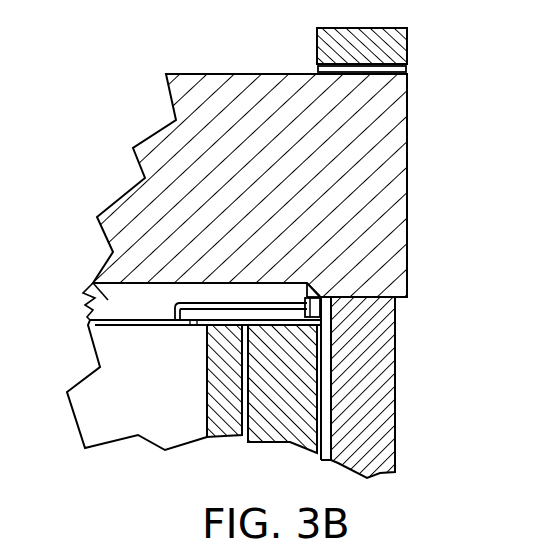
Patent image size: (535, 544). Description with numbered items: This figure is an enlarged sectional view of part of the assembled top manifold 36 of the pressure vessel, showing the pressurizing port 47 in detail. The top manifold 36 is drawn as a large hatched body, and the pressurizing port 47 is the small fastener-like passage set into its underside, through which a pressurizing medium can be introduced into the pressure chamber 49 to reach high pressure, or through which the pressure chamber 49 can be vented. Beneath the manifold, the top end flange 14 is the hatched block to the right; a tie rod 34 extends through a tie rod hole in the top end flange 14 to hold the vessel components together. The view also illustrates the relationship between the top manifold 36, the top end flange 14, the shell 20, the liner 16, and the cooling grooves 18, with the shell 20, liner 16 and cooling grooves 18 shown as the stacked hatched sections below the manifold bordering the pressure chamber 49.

The top end flange 14 is at (362, 118).
The liner 16 is at (207, 437).
The cooling grooves 18 is at (243, 427).
The shell 20 is at (295, 427).
The tie rods 34 is at (372, 340).
The top manifold 36 is at (92, 282).
The pressurizing port 47 is at (297, 281).
The pressure chamber 49 is at (102, 430).